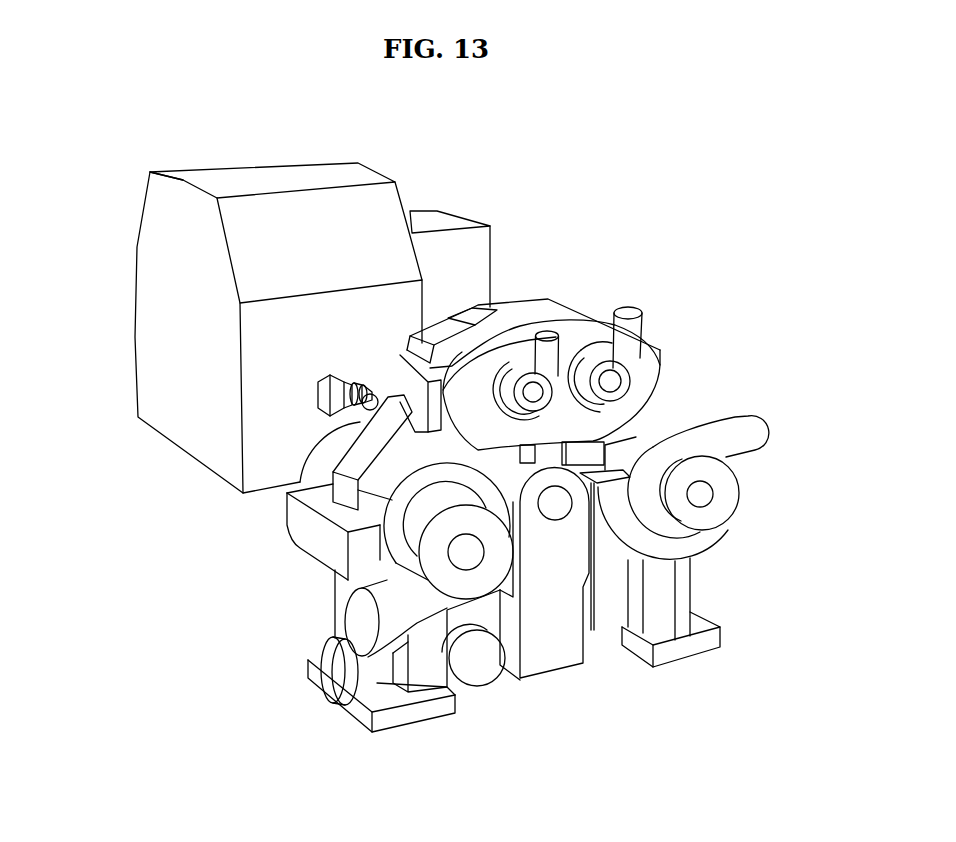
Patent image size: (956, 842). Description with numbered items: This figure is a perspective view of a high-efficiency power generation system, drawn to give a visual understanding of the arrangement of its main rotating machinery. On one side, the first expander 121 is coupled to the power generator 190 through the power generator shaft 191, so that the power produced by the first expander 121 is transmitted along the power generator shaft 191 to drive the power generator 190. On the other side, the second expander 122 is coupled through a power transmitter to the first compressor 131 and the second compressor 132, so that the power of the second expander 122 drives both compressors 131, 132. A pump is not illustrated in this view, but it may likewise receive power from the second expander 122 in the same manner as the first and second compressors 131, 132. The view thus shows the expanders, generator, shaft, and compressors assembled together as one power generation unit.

The power generator 190 is at (263, 362).
The power generator shaft 191 is at (328, 405).
The first compressor 131 is at (628, 373).
The second compressor 132 is at (543, 405).
The first expander 121 is at (495, 570).
The second expander 122 is at (712, 515).